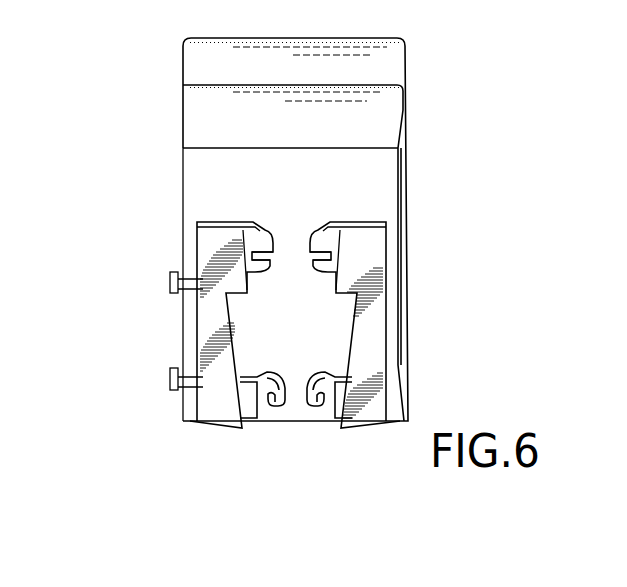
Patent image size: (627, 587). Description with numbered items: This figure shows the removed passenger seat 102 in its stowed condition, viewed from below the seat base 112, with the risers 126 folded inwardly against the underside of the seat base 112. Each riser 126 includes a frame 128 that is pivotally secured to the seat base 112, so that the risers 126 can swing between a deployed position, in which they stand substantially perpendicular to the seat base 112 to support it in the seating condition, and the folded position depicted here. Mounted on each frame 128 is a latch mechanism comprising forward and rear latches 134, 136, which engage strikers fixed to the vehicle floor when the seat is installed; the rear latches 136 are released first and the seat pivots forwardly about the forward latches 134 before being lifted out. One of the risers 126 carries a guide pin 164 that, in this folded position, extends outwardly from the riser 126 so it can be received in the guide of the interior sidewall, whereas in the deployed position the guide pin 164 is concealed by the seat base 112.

The passenger seat 102 is at (428, 66).
The seat base 112 is at (377, 169).
The risers 126 is at (206, 320).
The frame 128 is at (356, 342).
The forward latches 134 is at (264, 397).
The rear latches 136 is at (258, 236).
The guide pin 164 is at (170, 283).